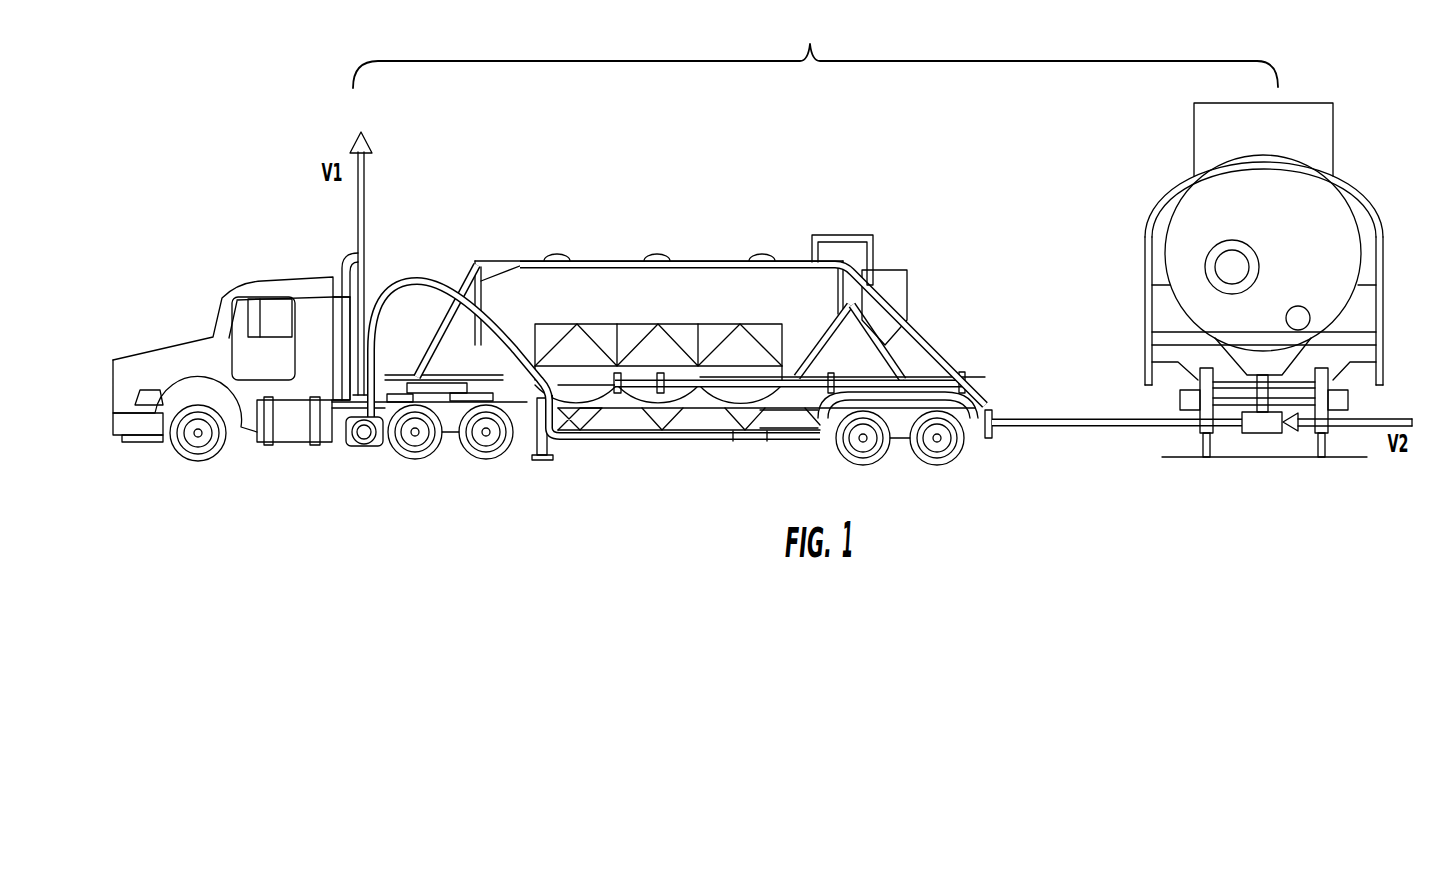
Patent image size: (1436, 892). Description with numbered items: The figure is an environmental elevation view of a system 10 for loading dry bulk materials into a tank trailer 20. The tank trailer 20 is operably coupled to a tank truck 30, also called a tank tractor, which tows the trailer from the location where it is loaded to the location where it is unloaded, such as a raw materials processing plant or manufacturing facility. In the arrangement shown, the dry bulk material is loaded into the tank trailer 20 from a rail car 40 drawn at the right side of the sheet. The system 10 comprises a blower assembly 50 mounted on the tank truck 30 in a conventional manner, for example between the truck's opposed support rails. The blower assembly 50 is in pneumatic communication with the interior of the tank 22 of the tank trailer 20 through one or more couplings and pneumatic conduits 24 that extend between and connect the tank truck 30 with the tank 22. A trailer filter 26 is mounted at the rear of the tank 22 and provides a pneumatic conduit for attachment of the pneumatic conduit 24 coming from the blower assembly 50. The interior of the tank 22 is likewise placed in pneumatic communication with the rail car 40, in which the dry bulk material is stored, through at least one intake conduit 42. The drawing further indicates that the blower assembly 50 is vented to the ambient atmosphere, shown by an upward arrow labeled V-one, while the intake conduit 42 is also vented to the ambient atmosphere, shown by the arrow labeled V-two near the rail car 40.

The system 10 is at (815, 52).
The tank trailer 20 is at (681, 315).
The tank 22 is at (646, 300).
The pneumatic conduit 24 is at (417, 280).
The trailer filter 26 is at (908, 290).
The tank truck 30 is at (214, 262).
The rail car 40 is at (1366, 138).
The intake conduit 42 is at (1098, 428).
The blower assembly 50 is at (360, 463).